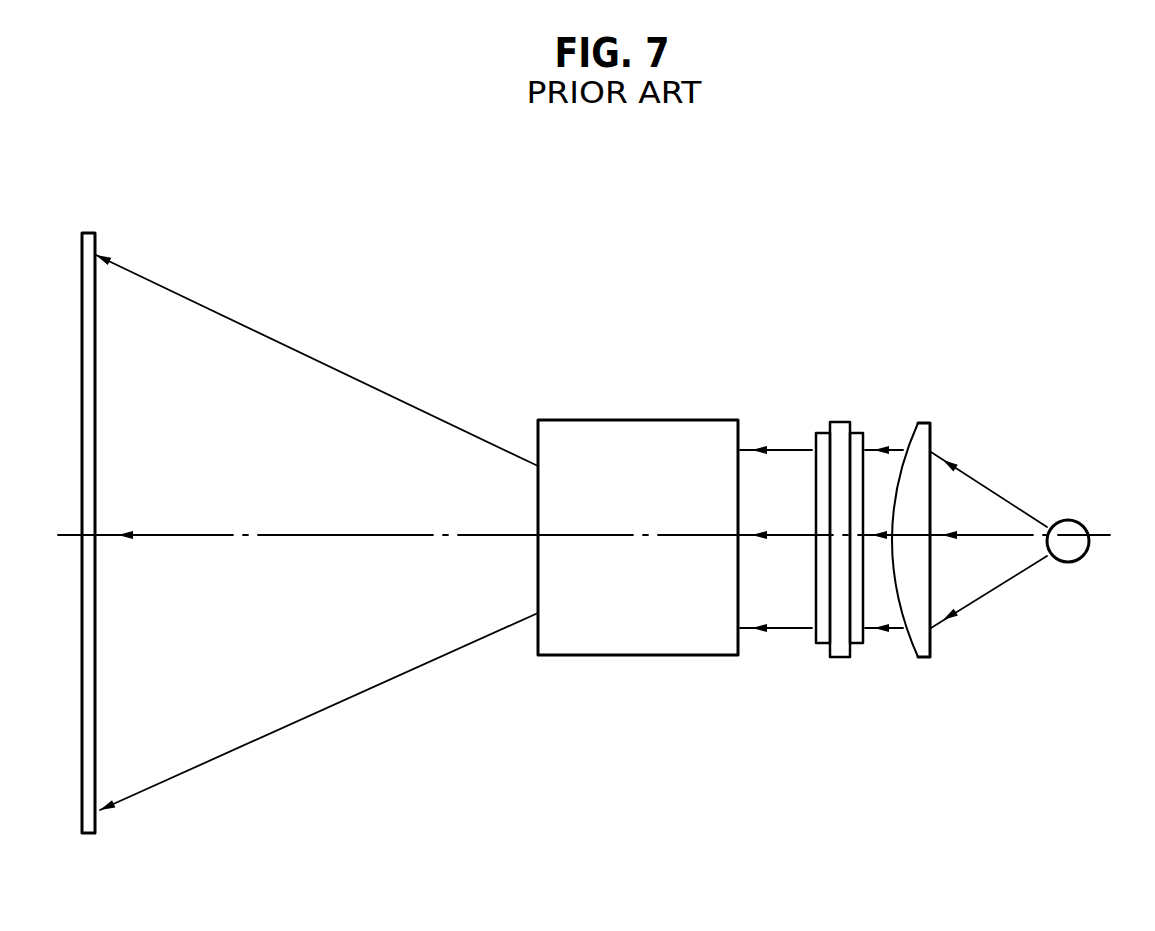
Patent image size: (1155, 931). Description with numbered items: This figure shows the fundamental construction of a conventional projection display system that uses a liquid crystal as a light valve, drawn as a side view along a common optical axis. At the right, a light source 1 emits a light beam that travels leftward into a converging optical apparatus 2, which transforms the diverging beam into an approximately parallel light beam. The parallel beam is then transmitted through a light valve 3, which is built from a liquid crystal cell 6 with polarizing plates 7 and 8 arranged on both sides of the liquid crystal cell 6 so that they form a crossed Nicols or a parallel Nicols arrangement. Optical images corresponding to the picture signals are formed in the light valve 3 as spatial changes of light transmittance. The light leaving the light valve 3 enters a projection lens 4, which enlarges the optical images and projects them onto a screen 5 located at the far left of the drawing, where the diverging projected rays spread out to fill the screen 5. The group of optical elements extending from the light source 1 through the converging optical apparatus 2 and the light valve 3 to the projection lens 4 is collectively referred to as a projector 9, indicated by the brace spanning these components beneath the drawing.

The light source 1 is at (1085, 527).
The converging optical apparatus 2 is at (935, 427).
The light valve 3 is at (819, 551).
The projection lens 4 is at (606, 425).
The screen 5 is at (97, 235).
The liquid crystal cell 6 is at (837, 657).
The polarizing plate 7 is at (857, 645).
The polarizing plate 8 is at (818, 645).
The projector 9 is at (1120, 817).